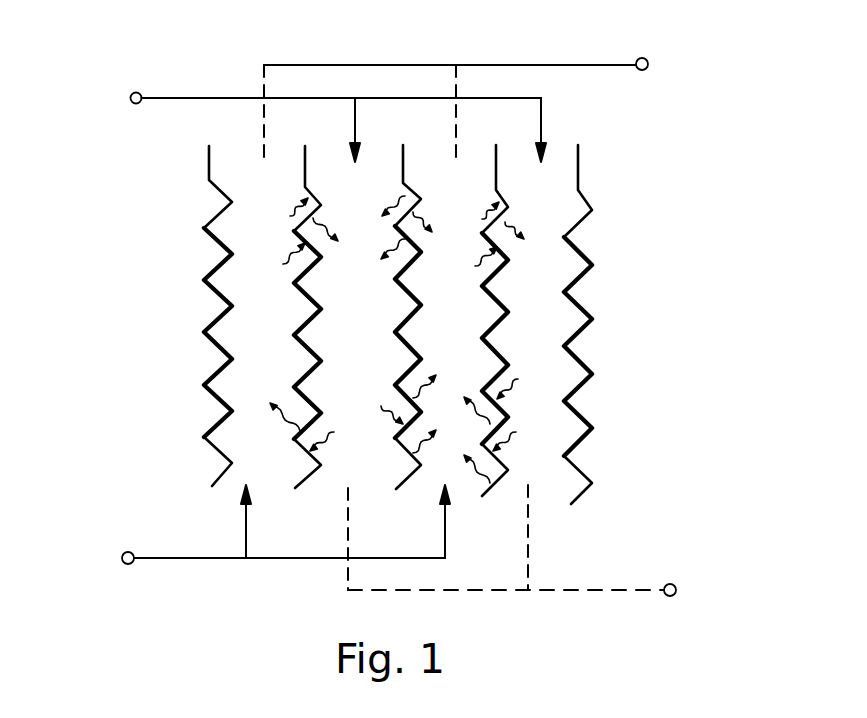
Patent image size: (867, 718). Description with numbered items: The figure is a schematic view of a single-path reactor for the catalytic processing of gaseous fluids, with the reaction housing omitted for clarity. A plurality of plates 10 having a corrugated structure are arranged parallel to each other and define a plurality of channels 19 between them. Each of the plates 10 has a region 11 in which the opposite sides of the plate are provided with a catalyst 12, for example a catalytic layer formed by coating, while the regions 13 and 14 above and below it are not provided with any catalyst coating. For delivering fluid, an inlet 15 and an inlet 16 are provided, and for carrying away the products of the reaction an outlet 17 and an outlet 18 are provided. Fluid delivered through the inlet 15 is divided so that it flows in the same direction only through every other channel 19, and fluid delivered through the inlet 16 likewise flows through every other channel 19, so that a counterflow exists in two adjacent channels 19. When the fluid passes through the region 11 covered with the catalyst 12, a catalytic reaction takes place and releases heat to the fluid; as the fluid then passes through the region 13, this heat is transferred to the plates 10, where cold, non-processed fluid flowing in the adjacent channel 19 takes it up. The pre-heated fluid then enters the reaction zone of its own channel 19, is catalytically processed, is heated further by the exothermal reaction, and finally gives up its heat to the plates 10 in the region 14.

The plate 10 is at (592, 490).
The region 11 is at (201, 332).
The catalyst 12 is at (152, 316).
The region 13 is at (206, 203).
The region 14 is at (203, 458).
The inlet 15 is at (122, 561).
The inlet 16 is at (131, 97).
The outlet 17 is at (674, 596).
The outlet 18 is at (648, 62).
The channel 19 is at (555, 420).